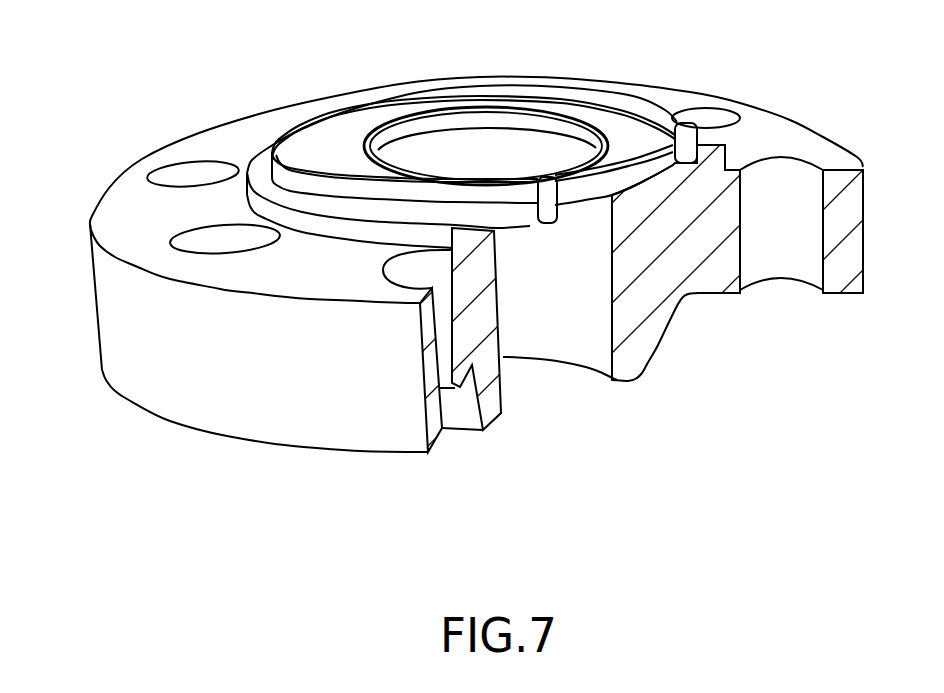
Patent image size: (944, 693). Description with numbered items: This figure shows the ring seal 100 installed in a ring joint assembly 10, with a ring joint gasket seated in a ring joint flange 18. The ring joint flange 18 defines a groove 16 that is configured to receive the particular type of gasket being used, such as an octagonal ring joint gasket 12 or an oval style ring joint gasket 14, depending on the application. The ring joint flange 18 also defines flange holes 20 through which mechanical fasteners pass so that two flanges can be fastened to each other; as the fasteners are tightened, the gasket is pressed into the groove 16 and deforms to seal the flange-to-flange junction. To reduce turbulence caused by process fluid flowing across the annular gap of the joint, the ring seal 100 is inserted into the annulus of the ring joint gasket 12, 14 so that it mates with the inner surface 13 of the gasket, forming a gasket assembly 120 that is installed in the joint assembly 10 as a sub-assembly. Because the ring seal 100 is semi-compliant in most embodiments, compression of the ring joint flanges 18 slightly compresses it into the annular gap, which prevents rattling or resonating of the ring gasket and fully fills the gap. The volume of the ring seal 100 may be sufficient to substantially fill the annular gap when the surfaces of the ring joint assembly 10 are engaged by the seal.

The ring joint assembly 10 is at (178, 80).
The octagonal ring joint gasket 12 is at (355, 100).
The inner surface 13 is at (542, 94).
The oval style ring joint gasket 14 is at (653, 102).
The groove 16 is at (690, 162).
The ring joint flange 18 is at (803, 125).
The flange holes 20 is at (132, 173).
The ring seal 100 is at (407, 107).
The gasket assembly 120 is at (545, 233).